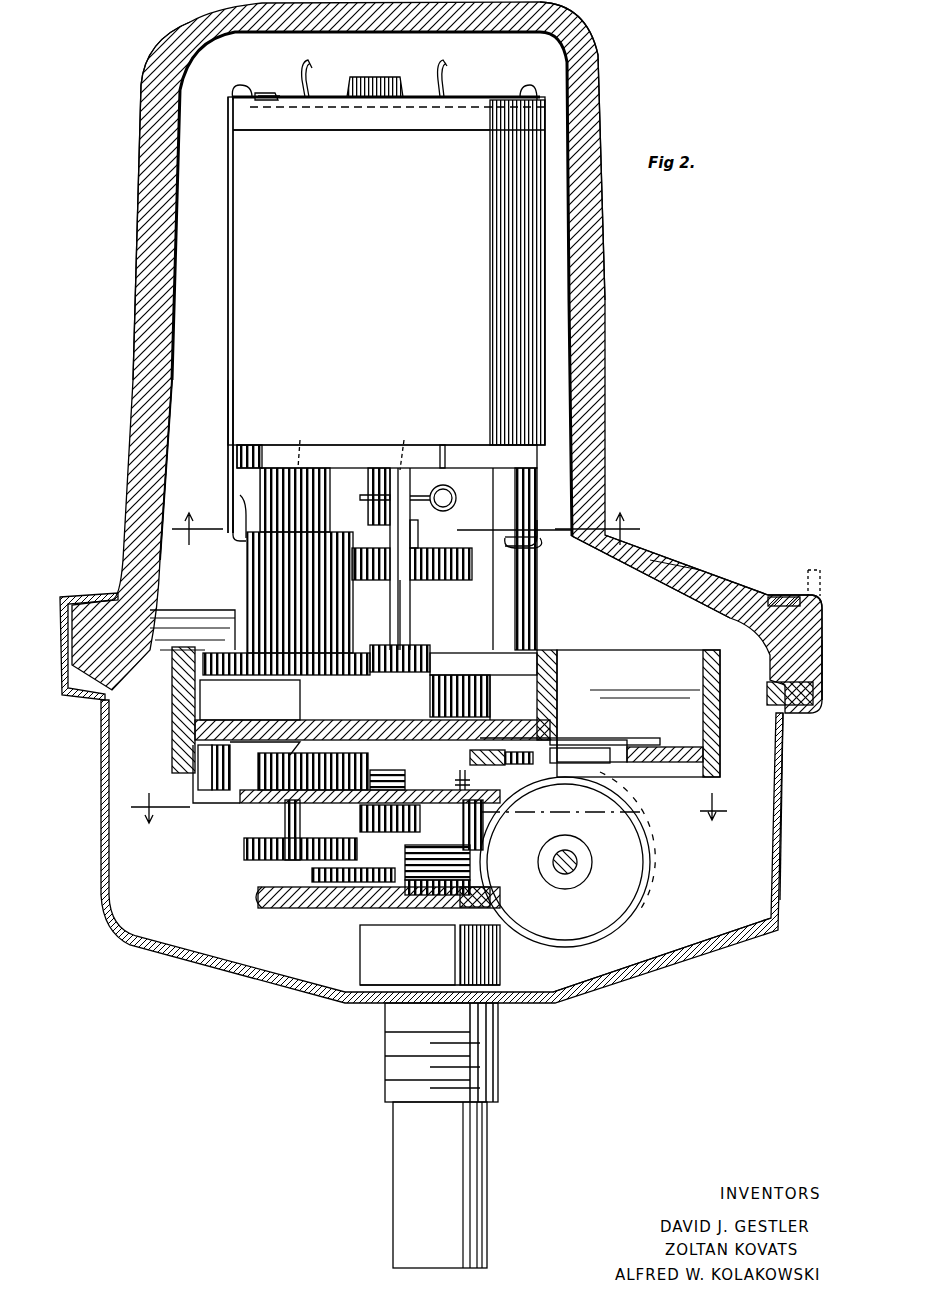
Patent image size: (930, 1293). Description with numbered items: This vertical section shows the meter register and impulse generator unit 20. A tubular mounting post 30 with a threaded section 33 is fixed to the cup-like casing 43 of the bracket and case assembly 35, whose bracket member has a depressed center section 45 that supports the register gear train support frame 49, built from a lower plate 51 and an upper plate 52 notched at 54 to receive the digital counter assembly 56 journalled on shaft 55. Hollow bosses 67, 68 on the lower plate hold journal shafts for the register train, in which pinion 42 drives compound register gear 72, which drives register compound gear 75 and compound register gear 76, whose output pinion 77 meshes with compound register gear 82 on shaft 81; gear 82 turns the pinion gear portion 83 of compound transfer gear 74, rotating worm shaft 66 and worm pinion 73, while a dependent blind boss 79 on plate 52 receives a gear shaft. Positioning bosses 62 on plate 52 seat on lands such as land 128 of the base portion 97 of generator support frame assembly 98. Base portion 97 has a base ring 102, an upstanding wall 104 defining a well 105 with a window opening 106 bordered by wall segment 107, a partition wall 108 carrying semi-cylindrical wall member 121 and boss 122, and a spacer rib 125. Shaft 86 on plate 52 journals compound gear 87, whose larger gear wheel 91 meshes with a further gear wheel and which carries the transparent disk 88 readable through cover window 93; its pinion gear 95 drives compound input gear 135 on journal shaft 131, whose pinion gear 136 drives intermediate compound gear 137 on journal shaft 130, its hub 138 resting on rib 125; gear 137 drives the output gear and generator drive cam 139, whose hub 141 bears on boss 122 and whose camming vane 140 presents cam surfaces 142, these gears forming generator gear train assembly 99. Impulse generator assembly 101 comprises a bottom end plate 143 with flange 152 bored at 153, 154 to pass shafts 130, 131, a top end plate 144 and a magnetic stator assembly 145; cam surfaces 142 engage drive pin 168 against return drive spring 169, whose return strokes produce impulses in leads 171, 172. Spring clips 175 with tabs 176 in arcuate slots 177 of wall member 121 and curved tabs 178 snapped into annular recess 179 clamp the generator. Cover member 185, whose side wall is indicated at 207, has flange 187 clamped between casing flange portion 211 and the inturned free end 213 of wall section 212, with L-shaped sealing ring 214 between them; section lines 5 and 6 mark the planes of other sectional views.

The meter register and impulse generator 20 is at (606, 292).
The cover member 185 is at (143, 88).
The housing side wall 207 is at (597, 137).
The transparent register cover window 93 is at (686, 572).
The annular ring-like flange 187 is at (800, 630).
The axially directed wall section 212 is at (823, 670).
The upper free end 213 is at (780, 596).
The sealing ring 214 is at (814, 700).
The annular flange portion 211 is at (795, 713).
The bracket and case assembly 35 is at (282, 990).
The cup-like casing 43 is at (685, 958).
The depressed center section 45 is at (372, 996).
The compound register gear 72 is at (407, 955).
The threaded section 33 is at (490, 1068).
The tubular mounting post 30 is at (392, 1160).
The spring clips 175 is at (228, 168).
The impulse generator assembly 101 is at (232, 217).
The magnetic stator assembly 145 is at (361, 175).
The bottom end plate 143 is at (488, 445).
The top end plate 144 is at (452, 118).
The lead 172 is at (312, 70).
The lead 171 is at (443, 80).
The curved tabs 178 is at (250, 93).
The annular recess 179 is at (283, 94).
The generator support frame assembly 98 is at (226, 401).
The segmental flange 152 is at (262, 445).
The through bore 153 is at (300, 440).
The through bore 154 is at (403, 440).
The journal shaft 130 is at (310, 480).
The drive pin 168 is at (378, 468).
The journal shaft 131 is at (408, 468).
The return drive spring 169 is at (456, 488).
The camming vane 140 is at (420, 528).
The output gear and generator drive cam 139 is at (460, 545).
The cam surfaces 142 is at (371, 553).
The dependent hub 141 is at (415, 593).
The cylindrical boss 122 is at (385, 628).
The semi-cylindrical wall member 121 is at (520, 596).
The partition wall 108 is at (480, 650).
The generator gear train assembly 99 is at (246, 565).
The intermediate compound gear 137 is at (248, 645).
The pinion gear 136 is at (428, 650).
The compound input gear 135 is at (450, 680).
The pinion gear 95 is at (485, 682).
The compound gear 87 is at (500, 705).
The compound transfer gear 74 is at (485, 752).
The upstanding wall 104 is at (558, 670).
The well 105 is at (638, 713).
The wall segment 107 is at (680, 755).
The window opening 106 is at (610, 750).
The transparent disk 88 is at (600, 738).
The pinion gear portion 83 is at (580, 755).
The larger gear wheel 91 is at (548, 738).
The upstanding shaft 86 is at (512, 765).
The base ring 102 is at (180, 728).
The spacer rib 125 is at (172, 675).
The base portion 97 is at (176, 640).
The land 128 is at (198, 751).
The positioning bosses 62 is at (200, 770).
The dependent hub 138 is at (298, 682).
The upstanding shaft 81 is at (320, 752).
The compound register gear 82 is at (268, 770).
The register gear train support frame 49 is at (262, 805).
The upper plate member 52 is at (240, 804).
The output pinion 77 is at (400, 779).
The worm shaft 66 is at (470, 782).
The register compound gear 75 is at (300, 836).
The dependent blind boss 79 is at (390, 818).
The hollow boss 67 is at (310, 872).
The register output worm pinion 73 is at (480, 855).
The pinion 42 is at (478, 878).
The notch 54 is at (485, 900).
The compound register gear 76 is at (490, 822).
The digital counter assembly 56 is at (652, 850).
The shaft 55 is at (578, 860).
The lower plate member 51 is at (255, 896).
The hollow boss 68 is at (335, 900).
The tabs 176 is at (235, 533).
The arcuate slots 177 is at (407, 521).
The section line 6- 6 is at (404, 532).
The section line 5- 5 is at (428, 804).